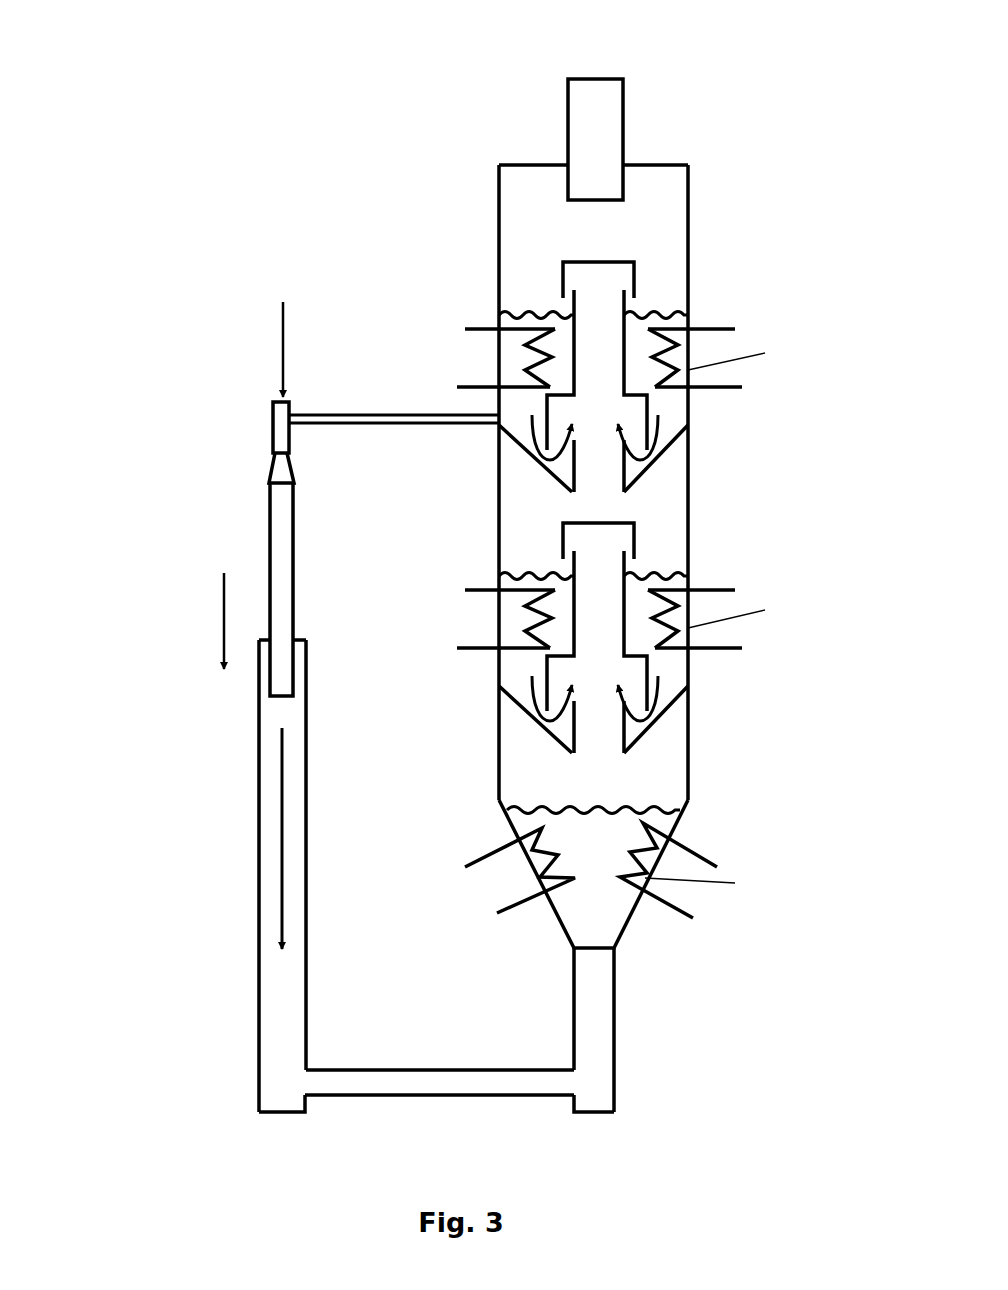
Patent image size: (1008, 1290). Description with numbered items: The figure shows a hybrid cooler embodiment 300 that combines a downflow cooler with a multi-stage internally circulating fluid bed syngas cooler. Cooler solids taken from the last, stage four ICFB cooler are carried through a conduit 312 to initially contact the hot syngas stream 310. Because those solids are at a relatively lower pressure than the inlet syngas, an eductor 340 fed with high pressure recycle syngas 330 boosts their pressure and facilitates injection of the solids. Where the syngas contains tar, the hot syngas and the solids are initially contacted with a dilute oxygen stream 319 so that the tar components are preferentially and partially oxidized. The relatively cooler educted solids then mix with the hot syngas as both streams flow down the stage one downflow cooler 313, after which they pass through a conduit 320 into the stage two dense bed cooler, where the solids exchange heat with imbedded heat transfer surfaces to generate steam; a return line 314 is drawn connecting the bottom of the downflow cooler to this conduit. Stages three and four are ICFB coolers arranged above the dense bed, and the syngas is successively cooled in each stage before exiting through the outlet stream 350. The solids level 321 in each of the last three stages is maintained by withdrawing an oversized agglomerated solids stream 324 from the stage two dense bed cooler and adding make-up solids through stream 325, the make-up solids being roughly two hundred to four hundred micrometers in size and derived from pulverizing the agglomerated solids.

The embodiment 300 is at (240, 833).
The hot syngas stream 310 is at (257, 672).
The conduit 312 is at (350, 413).
The stage 1 downflow cooler 313 is at (308, 902).
The return conduit 314 is at (455, 1097).
The dilute oxygen stream 319 is at (208, 611).
The conduit 320 is at (614, 1042).
The solids level 321 is at (540, 313).
The oversized agglomerated solids stream 324 is at (577, 910).
The make-up solids stream 325 is at (497, 227).
The high pressure recycle syngas 330 is at (283, 339).
The eductor 340 is at (275, 448).
The exit stream 350 is at (596, 123).